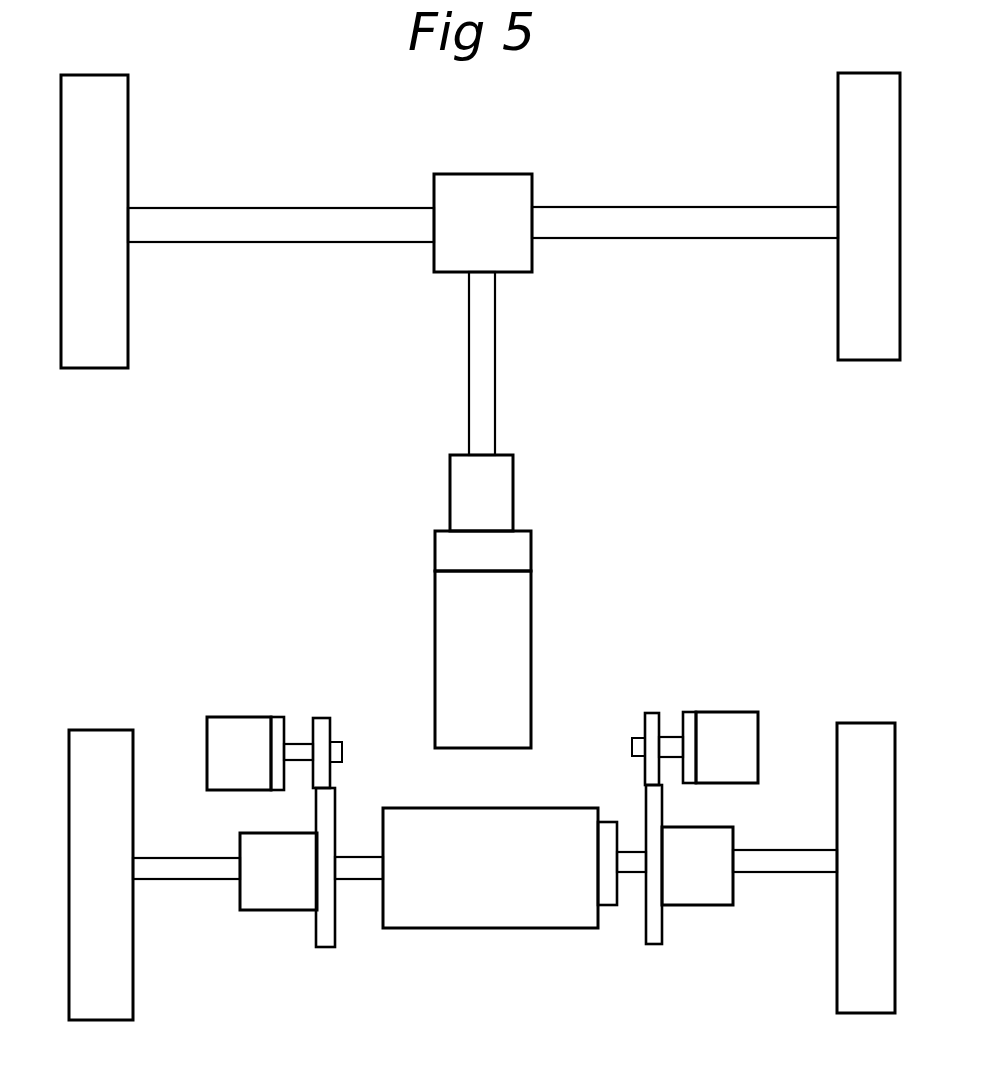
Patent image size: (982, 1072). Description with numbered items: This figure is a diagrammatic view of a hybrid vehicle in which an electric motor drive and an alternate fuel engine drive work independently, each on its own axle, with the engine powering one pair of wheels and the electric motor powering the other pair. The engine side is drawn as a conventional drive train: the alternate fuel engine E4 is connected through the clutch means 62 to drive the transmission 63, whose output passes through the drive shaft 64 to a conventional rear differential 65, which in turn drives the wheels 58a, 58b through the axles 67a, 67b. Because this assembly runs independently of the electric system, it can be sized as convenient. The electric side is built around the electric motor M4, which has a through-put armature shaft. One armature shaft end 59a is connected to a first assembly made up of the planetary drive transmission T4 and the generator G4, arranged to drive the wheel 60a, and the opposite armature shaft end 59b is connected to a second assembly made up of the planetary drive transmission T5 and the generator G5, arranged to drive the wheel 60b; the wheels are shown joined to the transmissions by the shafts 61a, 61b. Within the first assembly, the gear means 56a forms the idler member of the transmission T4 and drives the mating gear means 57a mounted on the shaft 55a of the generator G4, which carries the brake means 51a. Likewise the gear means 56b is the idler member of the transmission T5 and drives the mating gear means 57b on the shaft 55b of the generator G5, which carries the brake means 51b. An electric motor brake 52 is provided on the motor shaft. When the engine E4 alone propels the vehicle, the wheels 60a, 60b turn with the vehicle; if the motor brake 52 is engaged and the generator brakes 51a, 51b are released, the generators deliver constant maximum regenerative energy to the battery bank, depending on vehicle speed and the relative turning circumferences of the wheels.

The rear wheel 58a is at (112, 178).
The rear wheel 58b is at (880, 171).
The axle 67a is at (339, 230).
The axle 67b is at (641, 228).
The rear differential 65 is at (492, 239).
The drive shaft 64 is at (483, 367).
The transmission 63 is at (494, 512).
The clutch means 62 is at (490, 569).
The alternate fuel engine E4 is at (496, 670).
The front wheel 60a is at (113, 955).
The front wheel 60b is at (879, 930).
The rear axle shaft 61a is at (176, 870).
The rear axle shaft 61b is at (812, 863).
The planetary drive transmission T4 is at (288, 890).
The planetary drive transmission T5 is at (706, 888).
The gear means 56a is at (318, 933).
The gear means 56b is at (660, 925).
The mating gear means 57a is at (323, 730).
The mating gear means 57b is at (645, 729).
The shaft 55a is at (296, 744).
The shaft 55b is at (669, 739).
The brake means 51a is at (277, 726).
The brake means 51b is at (690, 718).
The generator G4 is at (248, 775).
The generator G5 is at (734, 770).
The armature shaft end 59a is at (358, 880).
The armature shaft end 59b is at (632, 872).
The electric motor M4 is at (502, 880).
The electric motor brake 52 is at (608, 825).